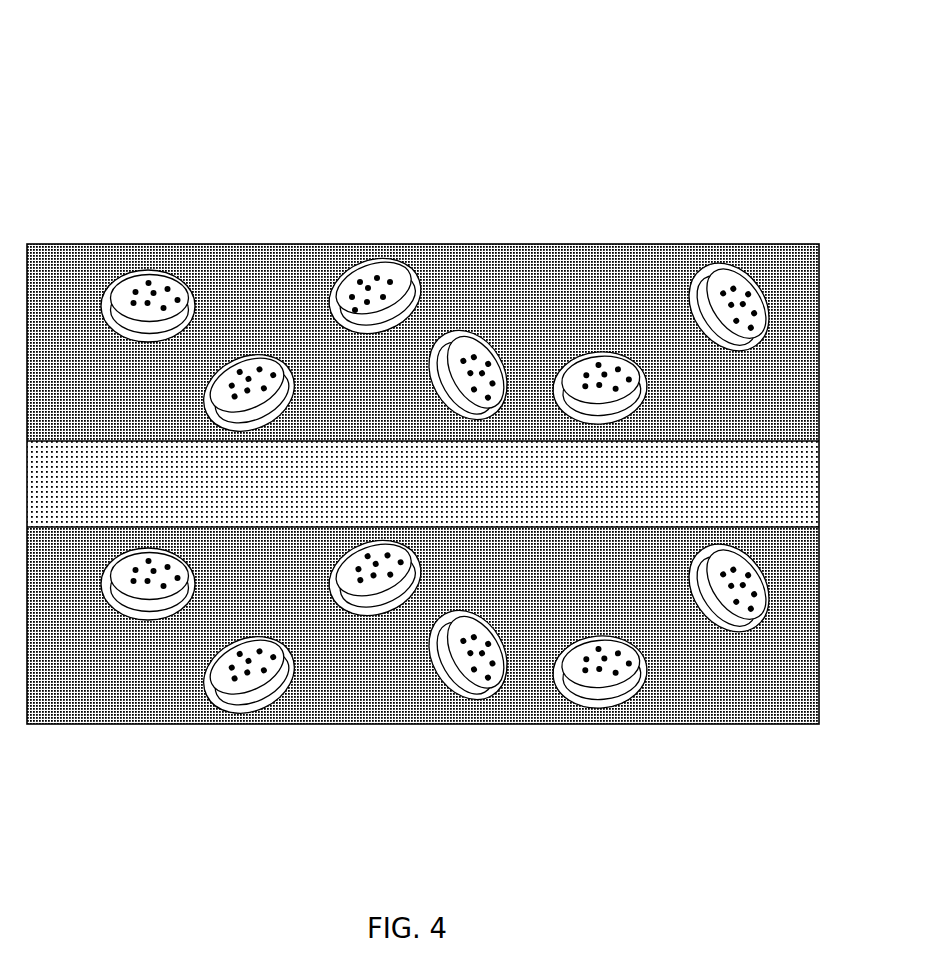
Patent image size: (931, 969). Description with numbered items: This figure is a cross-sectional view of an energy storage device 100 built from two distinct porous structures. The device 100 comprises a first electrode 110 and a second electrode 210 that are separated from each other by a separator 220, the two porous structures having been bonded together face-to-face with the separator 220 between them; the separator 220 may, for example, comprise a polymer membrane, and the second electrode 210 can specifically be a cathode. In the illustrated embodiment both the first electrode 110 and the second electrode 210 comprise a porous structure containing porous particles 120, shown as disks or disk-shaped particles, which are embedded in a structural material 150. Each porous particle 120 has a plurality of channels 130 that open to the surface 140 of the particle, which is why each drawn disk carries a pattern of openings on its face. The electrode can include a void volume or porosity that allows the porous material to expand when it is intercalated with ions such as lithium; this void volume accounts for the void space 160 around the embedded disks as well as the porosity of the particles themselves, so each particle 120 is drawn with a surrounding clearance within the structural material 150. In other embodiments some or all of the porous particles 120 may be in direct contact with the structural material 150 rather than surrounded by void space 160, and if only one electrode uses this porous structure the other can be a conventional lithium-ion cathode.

The energy storage device 100 is at (161, 52).
The first electrode 110 is at (72, 438).
The porous particles 120 is at (145, 610).
The channels 130 is at (383, 297).
The surface 140 is at (580, 383).
The structural material 150 is at (275, 317).
The void space 160 is at (699, 272).
The second electrode 210 is at (72, 722).
The separator 220 is at (495, 503).